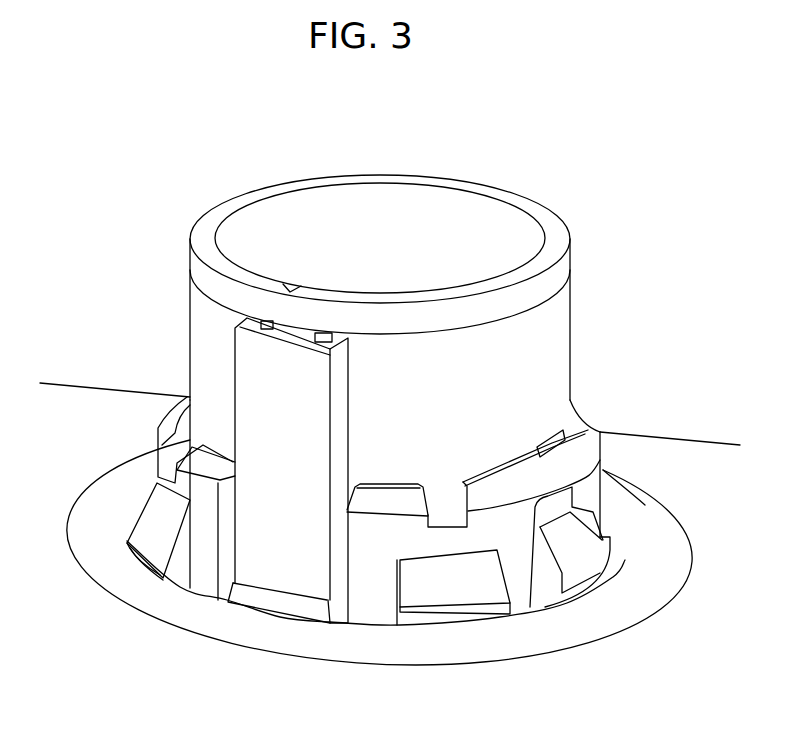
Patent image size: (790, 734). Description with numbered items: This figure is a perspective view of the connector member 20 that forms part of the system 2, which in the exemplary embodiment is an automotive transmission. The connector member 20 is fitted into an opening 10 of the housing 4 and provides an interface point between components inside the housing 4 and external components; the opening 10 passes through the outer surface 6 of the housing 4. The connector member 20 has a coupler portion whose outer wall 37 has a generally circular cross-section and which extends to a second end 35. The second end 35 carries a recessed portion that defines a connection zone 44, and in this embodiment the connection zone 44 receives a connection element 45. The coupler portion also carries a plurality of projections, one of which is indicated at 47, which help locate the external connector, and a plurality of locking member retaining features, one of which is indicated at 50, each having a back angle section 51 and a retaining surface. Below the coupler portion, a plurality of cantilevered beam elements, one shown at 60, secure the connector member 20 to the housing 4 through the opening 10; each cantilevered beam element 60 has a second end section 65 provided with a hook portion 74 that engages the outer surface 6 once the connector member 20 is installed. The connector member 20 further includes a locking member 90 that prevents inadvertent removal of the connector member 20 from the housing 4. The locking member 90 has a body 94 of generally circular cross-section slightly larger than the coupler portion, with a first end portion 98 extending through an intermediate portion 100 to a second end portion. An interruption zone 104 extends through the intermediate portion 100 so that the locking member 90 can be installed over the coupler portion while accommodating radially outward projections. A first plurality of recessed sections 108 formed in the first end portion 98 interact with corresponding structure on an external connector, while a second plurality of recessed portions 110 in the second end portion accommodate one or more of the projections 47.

The system 2 is at (130, 413).
The housing 4 is at (78, 452).
The outer surface 6 is at (634, 465).
The opening 10 is at (324, 612).
The connector member 20 is at (147, 262).
The second end 35 is at (555, 293).
The outer wall 37 is at (543, 346).
The connection zone 44 is at (425, 213).
The connection element 45 is at (562, 210).
The projection 47 is at (607, 572).
The locking member retaining feature 50 is at (622, 482).
The back angle section 51 is at (580, 412).
The cantilevered beam element 60 is at (473, 608).
The second end section 65 is at (432, 560).
The hook portion 74 is at (400, 624).
The locking member 90 is at (338, 475).
The body 94 is at (504, 532).
The first end portion 98 is at (372, 483).
The intermediate portion 100 is at (558, 578).
The interruption zone 104 is at (337, 533).
The recessed sections 108 is at (447, 495).
The recessed portions 110 is at (602, 557).